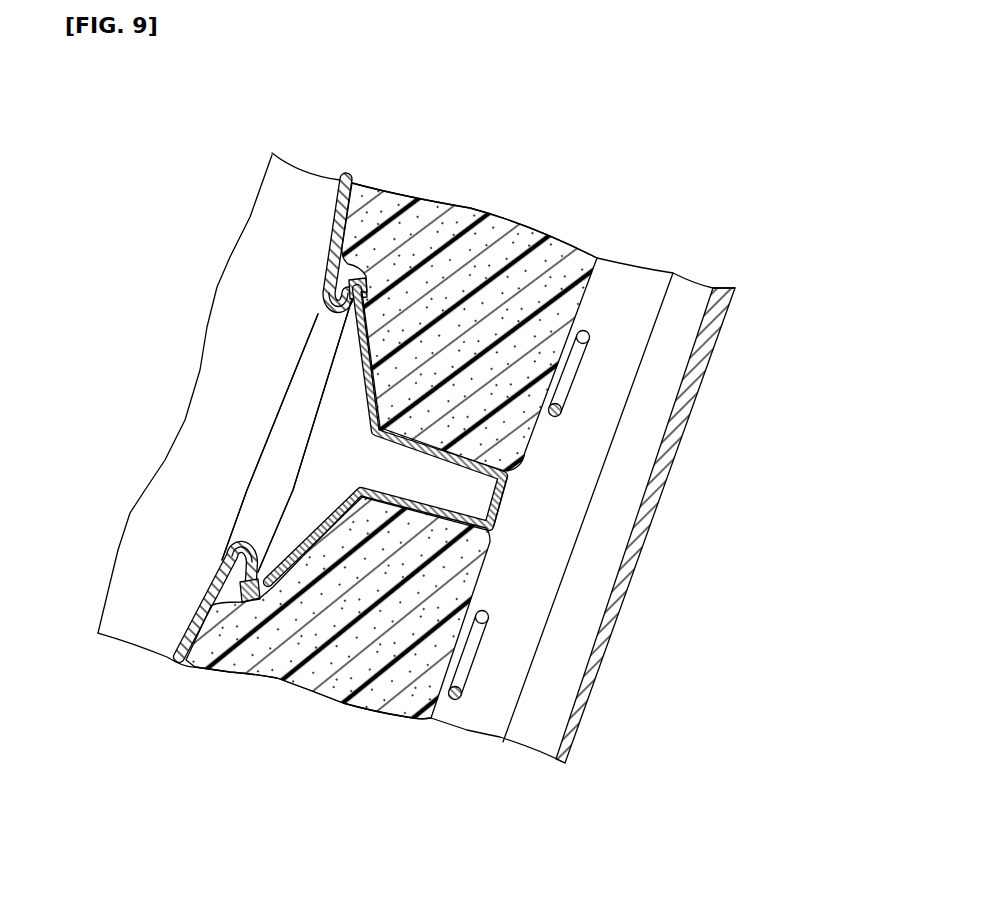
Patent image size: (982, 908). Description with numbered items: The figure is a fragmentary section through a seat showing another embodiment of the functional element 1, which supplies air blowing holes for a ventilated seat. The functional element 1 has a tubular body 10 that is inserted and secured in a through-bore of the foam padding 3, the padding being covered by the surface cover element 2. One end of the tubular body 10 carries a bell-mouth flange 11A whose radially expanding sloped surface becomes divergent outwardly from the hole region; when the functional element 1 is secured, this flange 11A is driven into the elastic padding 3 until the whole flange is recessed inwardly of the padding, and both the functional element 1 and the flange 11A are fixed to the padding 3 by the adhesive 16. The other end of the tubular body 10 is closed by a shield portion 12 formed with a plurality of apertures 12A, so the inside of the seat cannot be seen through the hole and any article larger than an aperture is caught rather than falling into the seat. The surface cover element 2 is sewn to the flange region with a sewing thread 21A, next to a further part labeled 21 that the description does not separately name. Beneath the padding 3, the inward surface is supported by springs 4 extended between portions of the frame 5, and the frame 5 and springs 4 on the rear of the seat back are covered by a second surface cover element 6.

The functional element 1 is at (130, 350).
The surface cover element 2 is at (332, 218).
The foam padding 3 is at (550, 253).
The springs 4 is at (573, 367).
The frame 5 is at (653, 288).
The surface cover element 6 is at (688, 393).
The tubular body 10 is at (418, 468).
The bell-mouth flange 11A is at (380, 373).
The shield portion 12 is at (497, 533).
The apertures 12A is at (503, 508).
The adhesive 16 is at (430, 440).
The hook portion 21 is at (364, 278).
The sewing thread 21A is at (347, 279).